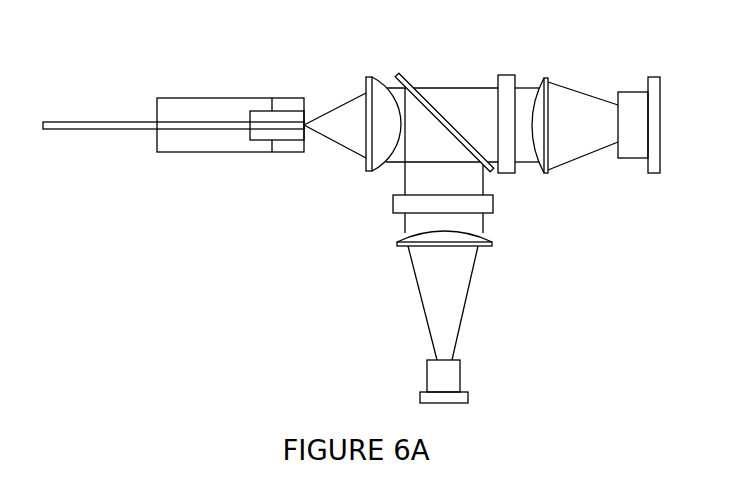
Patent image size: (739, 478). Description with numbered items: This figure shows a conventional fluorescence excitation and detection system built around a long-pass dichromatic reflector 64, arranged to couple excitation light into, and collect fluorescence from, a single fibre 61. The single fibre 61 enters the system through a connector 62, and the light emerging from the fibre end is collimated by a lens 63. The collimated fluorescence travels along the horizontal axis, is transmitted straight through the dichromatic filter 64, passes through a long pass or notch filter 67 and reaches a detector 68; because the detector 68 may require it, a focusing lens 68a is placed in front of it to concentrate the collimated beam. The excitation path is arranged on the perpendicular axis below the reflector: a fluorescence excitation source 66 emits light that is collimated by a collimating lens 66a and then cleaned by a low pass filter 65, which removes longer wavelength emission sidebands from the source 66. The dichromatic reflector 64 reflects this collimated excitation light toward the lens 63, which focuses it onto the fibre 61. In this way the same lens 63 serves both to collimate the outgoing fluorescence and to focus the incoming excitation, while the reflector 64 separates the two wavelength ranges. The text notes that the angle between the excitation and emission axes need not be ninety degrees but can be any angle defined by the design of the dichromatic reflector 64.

The single fibre 61 is at (100, 123).
The connector 62 is at (213, 143).
The lens 63 is at (370, 172).
The long-pass dichromatic reflector 64 is at (407, 82).
The low pass filter 65 is at (393, 205).
The collimating lens 66a is at (430, 245).
The source 66 is at (468, 396).
The long pass or notch filter 67 is at (505, 175).
The focusing lens 68a is at (545, 174).
The detector 68 is at (640, 160).